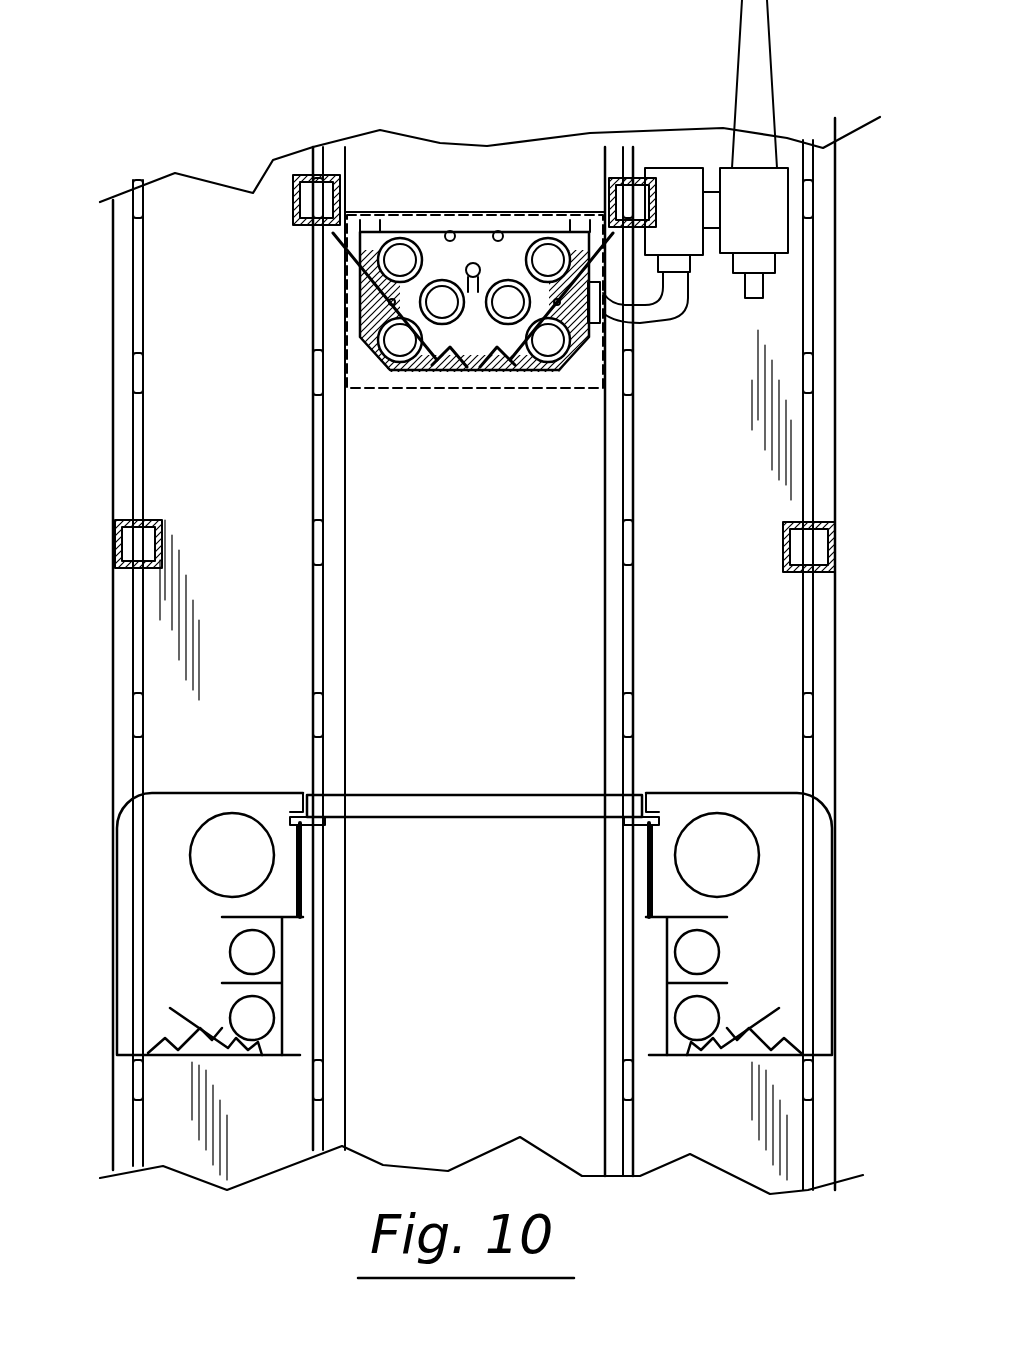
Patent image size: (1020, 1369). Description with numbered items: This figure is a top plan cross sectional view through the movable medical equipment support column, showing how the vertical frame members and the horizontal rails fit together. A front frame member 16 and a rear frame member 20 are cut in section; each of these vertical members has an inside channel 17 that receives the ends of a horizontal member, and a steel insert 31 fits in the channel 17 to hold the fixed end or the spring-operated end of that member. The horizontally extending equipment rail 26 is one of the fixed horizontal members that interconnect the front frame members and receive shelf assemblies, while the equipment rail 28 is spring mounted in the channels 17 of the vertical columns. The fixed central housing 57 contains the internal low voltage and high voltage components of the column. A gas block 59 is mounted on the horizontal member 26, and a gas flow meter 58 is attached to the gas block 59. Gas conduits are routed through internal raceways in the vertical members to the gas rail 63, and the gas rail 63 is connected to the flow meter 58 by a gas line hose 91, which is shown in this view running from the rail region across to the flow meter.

The front frame member 16 is at (835, 676).
The channel 17 is at (630, 660).
The rear frame member 20 is at (347, 628).
The front horizontally extending equipment rail 26 is at (612, 180).
The front horizontally extending equipment rail 28 is at (835, 545).
The steel insert 31 is at (630, 757).
The fixed central housing 57 is at (115, 872).
The gas flow meter 58 is at (770, 75).
The gas block 59 is at (672, 168).
The gas rail 63 is at (513, 370).
The gas line hose 91 is at (668, 308).